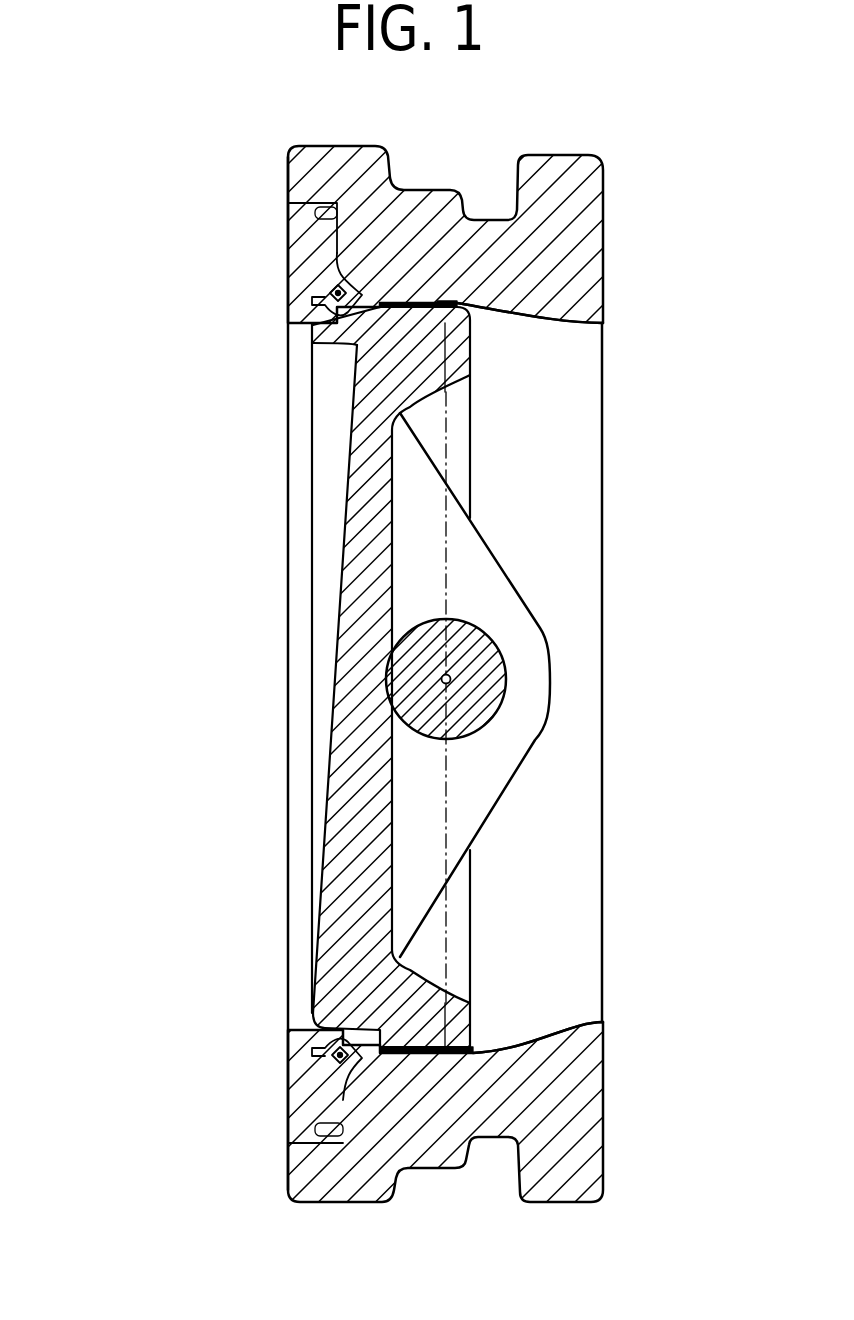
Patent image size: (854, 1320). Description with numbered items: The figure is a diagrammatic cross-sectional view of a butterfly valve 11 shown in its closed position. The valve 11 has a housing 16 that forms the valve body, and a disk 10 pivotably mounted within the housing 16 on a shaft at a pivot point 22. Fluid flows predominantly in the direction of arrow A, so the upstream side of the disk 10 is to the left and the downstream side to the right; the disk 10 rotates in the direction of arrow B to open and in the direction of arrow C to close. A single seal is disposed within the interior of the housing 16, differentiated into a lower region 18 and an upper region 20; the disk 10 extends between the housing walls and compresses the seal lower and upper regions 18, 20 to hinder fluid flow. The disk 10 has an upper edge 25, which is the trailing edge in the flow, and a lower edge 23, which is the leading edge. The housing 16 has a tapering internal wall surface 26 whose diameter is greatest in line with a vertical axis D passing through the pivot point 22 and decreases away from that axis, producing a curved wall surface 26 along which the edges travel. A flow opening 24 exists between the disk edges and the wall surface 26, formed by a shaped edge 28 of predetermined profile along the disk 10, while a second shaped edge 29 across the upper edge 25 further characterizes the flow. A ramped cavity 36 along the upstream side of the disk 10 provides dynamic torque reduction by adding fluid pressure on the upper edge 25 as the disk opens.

The disk 10 is at (372, 466).
The butterfly valve 11 is at (272, 167).
The housing 16 is at (565, 213).
The seal lower region 18 is at (320, 1050).
The seal upper region 20 is at (313, 297).
The pivot point 22 is at (455, 677).
The lower edge 23 is at (340, 993).
The flow opening 24 is at (472, 305).
The upper edge 25 is at (380, 303).
The wall surface 26 is at (548, 318).
The shaped edge 28 is at (473, 1003).
The second shaped edge 29 is at (470, 390).
The ramped cavity 36 is at (345, 548).
The arrow A is at (117, 668).
The arrow B is at (490, 622).
The arrow C is at (490, 739).
The axis D is at (447, 448).